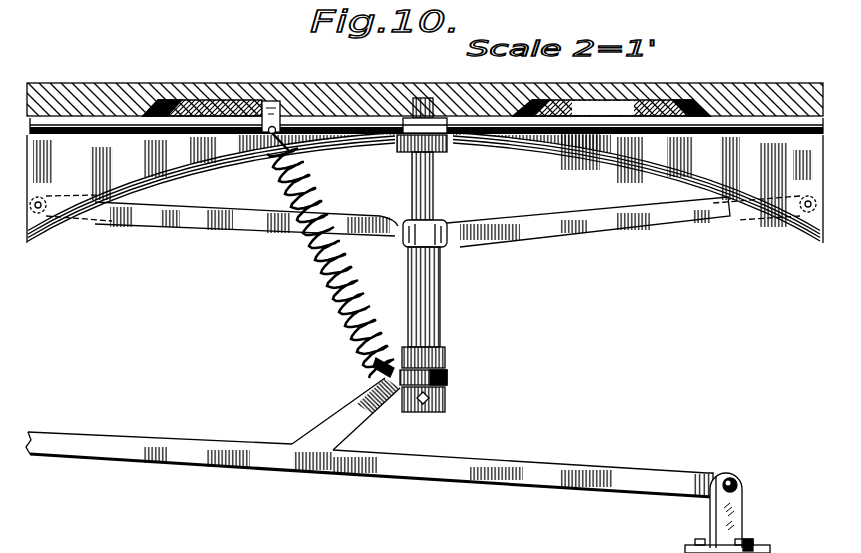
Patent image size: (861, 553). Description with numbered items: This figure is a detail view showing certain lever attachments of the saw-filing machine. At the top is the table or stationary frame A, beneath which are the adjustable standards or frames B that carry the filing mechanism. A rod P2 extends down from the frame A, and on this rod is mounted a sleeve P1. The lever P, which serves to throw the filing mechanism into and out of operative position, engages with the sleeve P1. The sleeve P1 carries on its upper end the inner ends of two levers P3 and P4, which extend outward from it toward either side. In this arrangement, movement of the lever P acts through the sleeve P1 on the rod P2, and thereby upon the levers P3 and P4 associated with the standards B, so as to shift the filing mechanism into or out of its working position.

The table or stationary frame A is at (347, 84).
The adjustable standards or frames B is at (43, 174).
The lever P is at (127, 438).
The sleeve P1 is at (437, 310).
The rod P2 is at (483, 189).
The lever P3 is at (610, 217).
The lever P4 is at (222, 222).